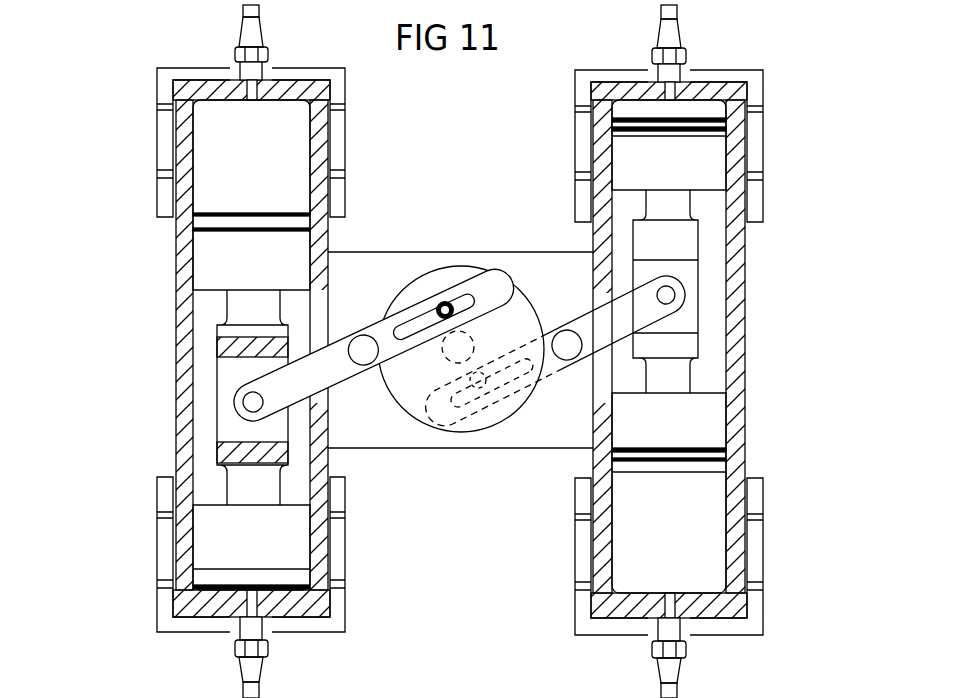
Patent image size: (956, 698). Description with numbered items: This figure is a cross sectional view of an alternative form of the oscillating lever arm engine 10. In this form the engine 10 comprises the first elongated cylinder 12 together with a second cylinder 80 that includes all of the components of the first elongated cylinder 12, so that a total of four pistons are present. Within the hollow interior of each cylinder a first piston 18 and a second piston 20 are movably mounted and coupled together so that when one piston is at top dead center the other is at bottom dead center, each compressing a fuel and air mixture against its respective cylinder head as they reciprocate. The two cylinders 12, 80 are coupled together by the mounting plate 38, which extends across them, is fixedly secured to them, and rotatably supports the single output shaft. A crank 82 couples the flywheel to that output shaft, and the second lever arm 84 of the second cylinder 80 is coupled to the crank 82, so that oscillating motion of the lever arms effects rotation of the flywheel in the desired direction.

The oscillating lever arm engine 10 is at (152, 136).
The elongated cylinder 12 is at (175, 362).
The first piston 18 is at (618, 137).
The second piston 20 is at (612, 592).
The mounting plate 38 is at (370, 449).
The second cylinder 80 is at (747, 352).
The crank 82 is at (512, 417).
The second lever arm 84 is at (583, 315).